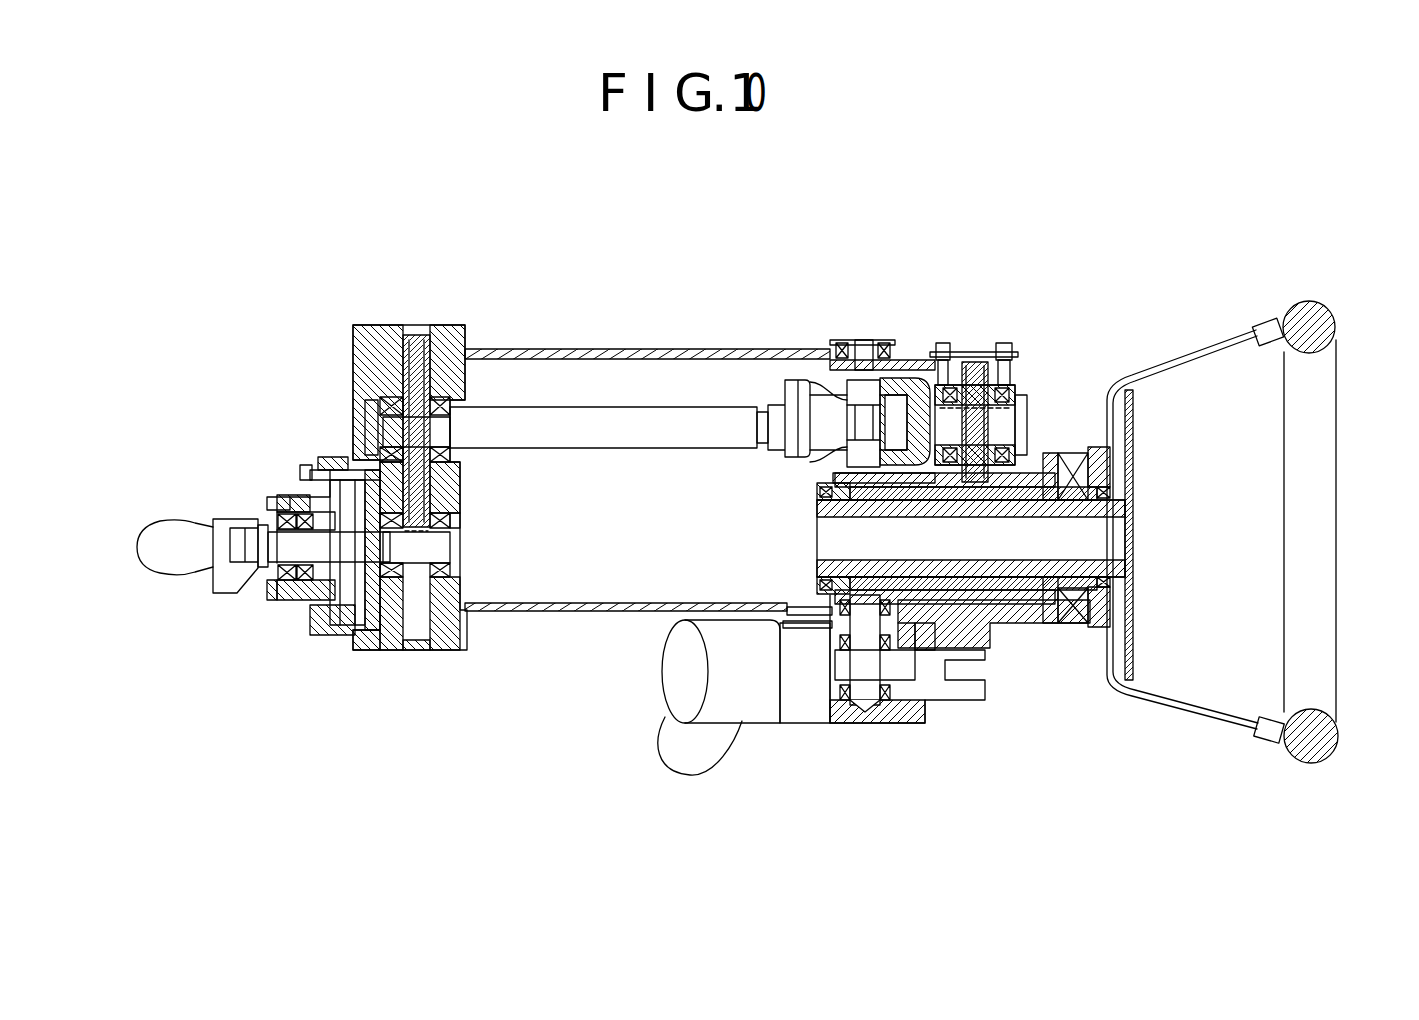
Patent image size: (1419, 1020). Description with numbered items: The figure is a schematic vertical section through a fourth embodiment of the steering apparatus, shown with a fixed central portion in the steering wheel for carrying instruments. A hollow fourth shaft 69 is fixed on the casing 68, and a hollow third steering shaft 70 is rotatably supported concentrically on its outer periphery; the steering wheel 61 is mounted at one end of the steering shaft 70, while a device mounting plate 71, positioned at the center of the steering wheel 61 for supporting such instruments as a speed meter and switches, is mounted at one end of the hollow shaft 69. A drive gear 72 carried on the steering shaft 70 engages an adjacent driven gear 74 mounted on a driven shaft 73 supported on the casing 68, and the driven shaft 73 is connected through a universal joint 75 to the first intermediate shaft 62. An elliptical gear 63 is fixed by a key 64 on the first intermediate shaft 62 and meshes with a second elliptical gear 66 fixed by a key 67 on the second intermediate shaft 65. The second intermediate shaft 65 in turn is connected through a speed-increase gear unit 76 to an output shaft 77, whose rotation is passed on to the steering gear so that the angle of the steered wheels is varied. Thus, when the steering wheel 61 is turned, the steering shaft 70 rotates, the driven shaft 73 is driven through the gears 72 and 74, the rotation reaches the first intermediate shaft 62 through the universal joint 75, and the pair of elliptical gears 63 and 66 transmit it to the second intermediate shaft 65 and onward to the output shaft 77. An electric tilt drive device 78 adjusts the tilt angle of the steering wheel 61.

The steering wheel 61 is at (1292, 473).
The first intermediate shaft 62 is at (605, 432).
The elliptical gear 63 is at (418, 372).
The key 64 is at (465, 358).
The second intermediate shaft 65 is at (428, 548).
The elliptical gear 66 is at (458, 483).
The key 67 is at (455, 520).
The casing 68 is at (830, 480).
The hollow fourth shaft 69 is at (857, 517).
The hollow third steering shaft 70 is at (1038, 487).
The device mounting plate 71 is at (1133, 435).
The drive gear 72 is at (1025, 443).
The driven shaft 73 is at (998, 420).
The driven gear 74 is at (1017, 363).
The universal joint 75 is at (868, 395).
The speed-increase gear unit 76 is at (343, 613).
The output shaft 77 is at (286, 552).
The electric tilt drive device 78 is at (748, 707).